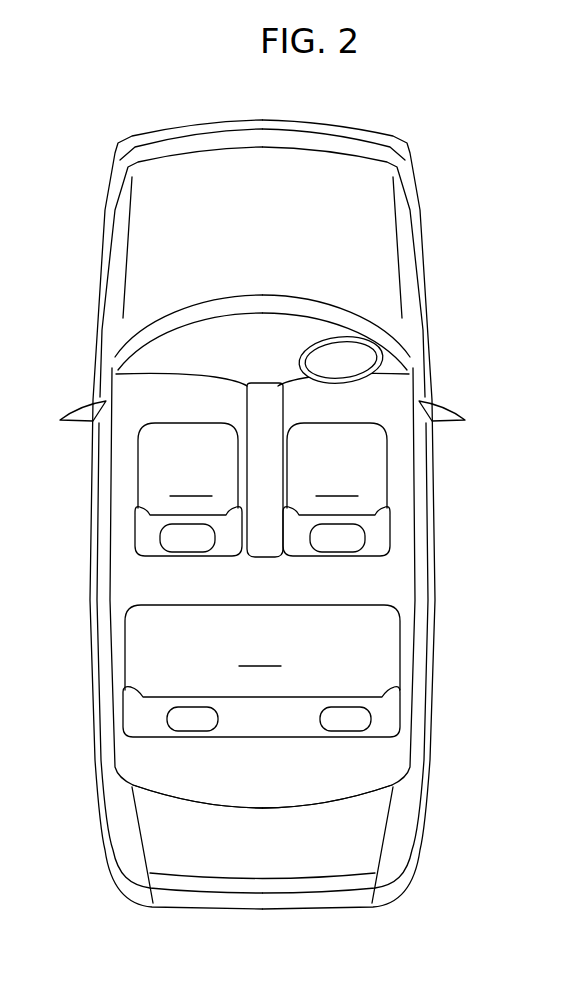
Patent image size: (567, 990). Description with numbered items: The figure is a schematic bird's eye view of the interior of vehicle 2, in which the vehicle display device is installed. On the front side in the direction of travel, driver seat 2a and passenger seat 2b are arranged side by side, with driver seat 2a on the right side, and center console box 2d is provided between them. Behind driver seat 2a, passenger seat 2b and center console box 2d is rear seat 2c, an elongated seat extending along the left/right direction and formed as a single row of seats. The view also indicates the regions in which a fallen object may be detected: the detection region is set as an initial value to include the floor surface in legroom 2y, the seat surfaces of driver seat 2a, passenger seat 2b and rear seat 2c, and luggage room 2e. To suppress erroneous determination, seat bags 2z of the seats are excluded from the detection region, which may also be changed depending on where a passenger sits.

The vehicle 2 is at (371, 135).
The driver seat 2a is at (383, 493).
The passenger seat 2b is at (143, 488).
The rear seat 2c is at (383, 643).
The center console box 2d is at (265, 447).
The luggage room 2e is at (383, 758).
The legroom 2y is at (143, 578).
The seat bag 2z is at (143, 535).